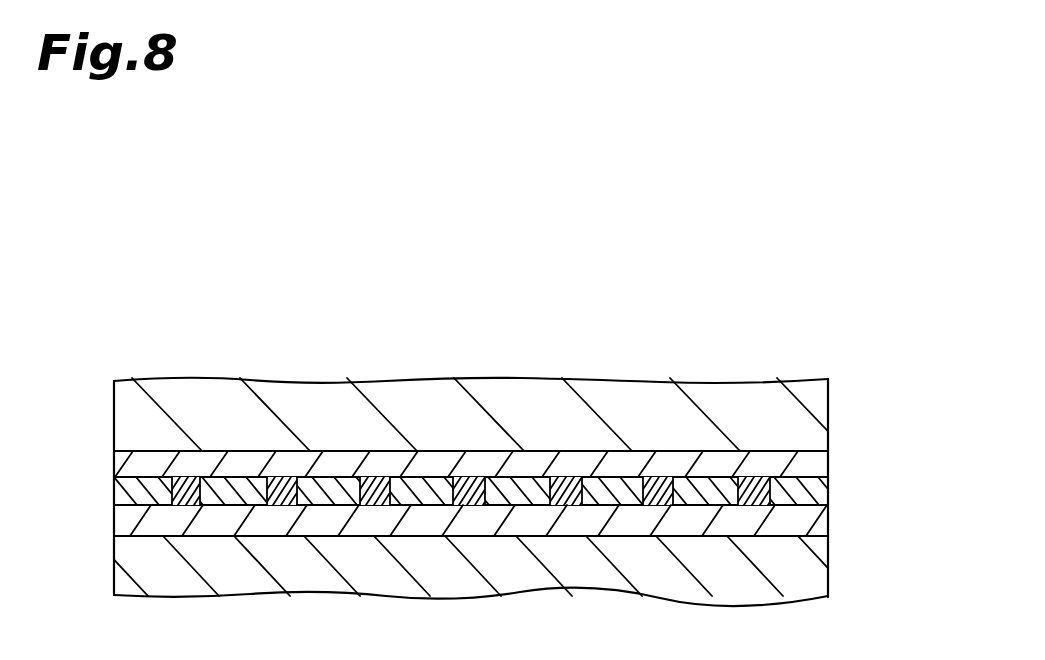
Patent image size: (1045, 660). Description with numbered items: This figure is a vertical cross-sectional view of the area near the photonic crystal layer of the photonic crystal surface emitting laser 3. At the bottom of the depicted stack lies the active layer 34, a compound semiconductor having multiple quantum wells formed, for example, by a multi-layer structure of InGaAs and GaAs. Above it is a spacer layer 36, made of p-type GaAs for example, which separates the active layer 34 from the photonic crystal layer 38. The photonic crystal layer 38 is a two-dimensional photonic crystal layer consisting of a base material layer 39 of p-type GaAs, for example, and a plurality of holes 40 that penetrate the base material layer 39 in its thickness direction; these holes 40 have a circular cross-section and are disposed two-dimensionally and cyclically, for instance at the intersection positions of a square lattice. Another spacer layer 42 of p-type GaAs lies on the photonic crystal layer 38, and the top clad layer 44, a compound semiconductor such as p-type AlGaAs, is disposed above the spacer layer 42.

The photonic crystal surface emitting laser 3 is at (166, 302).
The active layer 34 is at (820, 563).
The spacer layer 36 is at (820, 522).
The photonic crystal layer 38 is at (510, 420).
The base material layer 39 is at (148, 485).
The holes 40 is at (192, 487).
The spacer layer 42 is at (820, 467).
The top clad layer 44 is at (820, 418).